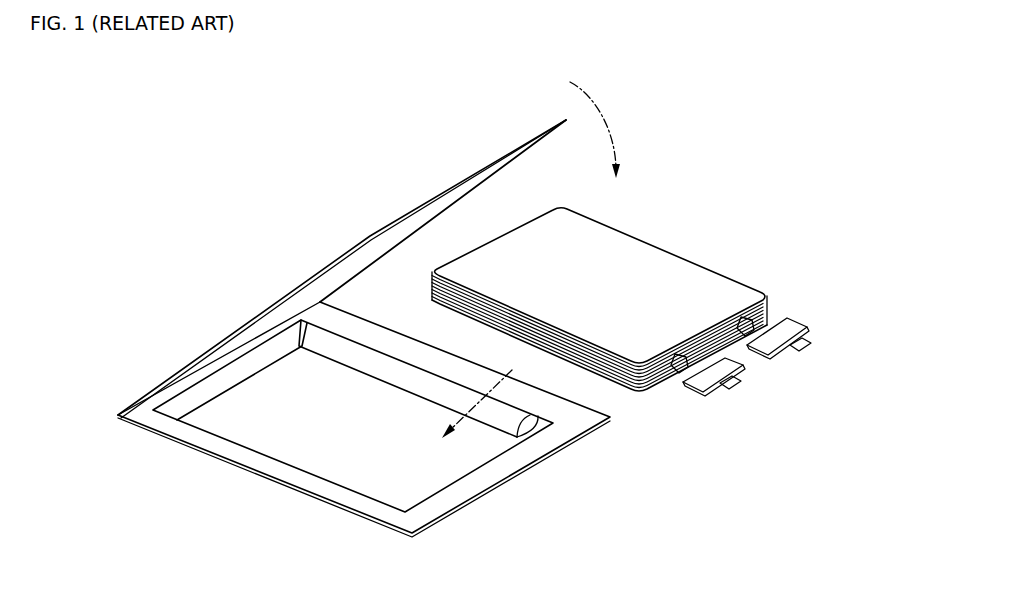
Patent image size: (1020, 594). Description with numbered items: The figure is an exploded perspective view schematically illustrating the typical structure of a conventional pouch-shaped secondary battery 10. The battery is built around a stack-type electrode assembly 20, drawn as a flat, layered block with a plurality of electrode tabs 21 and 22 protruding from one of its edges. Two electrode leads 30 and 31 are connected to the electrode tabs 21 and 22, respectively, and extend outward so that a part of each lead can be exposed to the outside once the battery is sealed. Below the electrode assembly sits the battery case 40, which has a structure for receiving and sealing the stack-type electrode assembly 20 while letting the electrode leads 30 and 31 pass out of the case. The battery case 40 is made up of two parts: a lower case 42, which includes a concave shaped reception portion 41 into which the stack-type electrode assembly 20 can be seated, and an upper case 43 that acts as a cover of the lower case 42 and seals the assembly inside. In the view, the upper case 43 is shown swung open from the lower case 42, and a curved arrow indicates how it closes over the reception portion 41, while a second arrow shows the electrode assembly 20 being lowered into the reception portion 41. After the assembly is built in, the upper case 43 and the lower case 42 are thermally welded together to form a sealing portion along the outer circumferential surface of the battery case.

The pouch-shaped secondary battery 10 is at (194, 111).
The stack-type electrode assembly 20 is at (674, 234).
The electrode tab 21 is at (740, 318).
The electrode tab 22 is at (676, 355).
The electrode lead 30 is at (812, 343).
The electrode lead 31 is at (742, 387).
The battery case 40 is at (236, 286).
The reception portion 41 is at (322, 472).
The lower case 42 is at (215, 462).
The upper case 43 is at (150, 405).